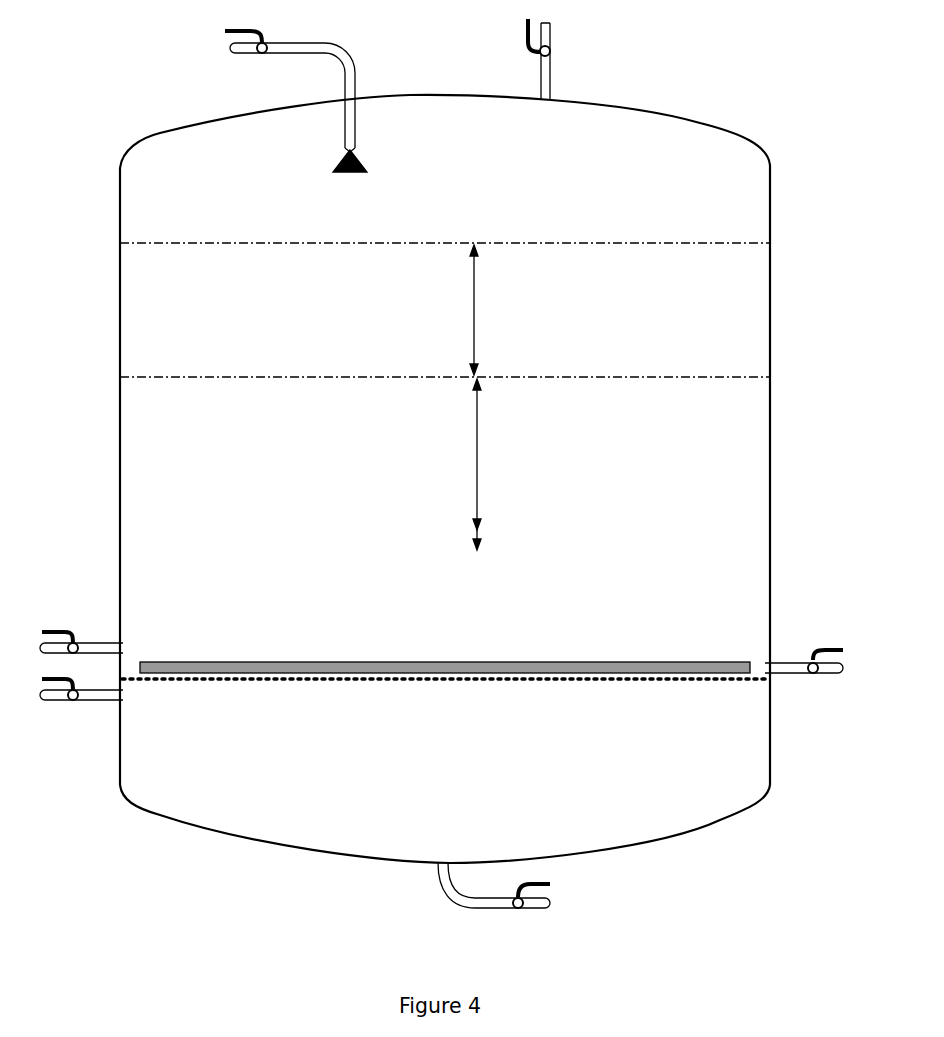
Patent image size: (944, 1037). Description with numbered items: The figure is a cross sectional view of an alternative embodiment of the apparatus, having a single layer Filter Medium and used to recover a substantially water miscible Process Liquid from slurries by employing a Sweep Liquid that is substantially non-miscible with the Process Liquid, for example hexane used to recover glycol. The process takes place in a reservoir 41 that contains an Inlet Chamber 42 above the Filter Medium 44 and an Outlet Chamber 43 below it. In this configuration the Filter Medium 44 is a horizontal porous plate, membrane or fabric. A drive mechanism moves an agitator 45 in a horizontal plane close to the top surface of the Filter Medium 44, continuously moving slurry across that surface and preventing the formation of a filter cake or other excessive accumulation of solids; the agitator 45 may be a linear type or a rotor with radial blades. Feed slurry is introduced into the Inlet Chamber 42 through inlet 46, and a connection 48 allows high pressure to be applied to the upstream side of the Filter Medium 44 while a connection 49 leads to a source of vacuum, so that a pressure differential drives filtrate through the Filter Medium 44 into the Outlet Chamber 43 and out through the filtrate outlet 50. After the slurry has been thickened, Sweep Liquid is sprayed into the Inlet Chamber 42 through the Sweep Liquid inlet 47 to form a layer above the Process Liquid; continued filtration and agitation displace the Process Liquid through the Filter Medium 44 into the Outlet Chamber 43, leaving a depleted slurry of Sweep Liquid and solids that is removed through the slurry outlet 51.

The reservoir 41 is at (468, 467).
The Inlet Chamber 42 is at (727, 183).
The Outlet Chamber 43 is at (710, 798).
The Filter Medium 44 is at (328, 680).
The agitator 45 is at (478, 662).
The inlet 46 is at (105, 643).
The Sweep Liquid inlet 47 is at (287, 52).
The connection 48 is at (552, 82).
The connection 49 is at (98, 700).
The filtrate outlet 50 is at (446, 890).
The slurry outlet 51 is at (785, 663).